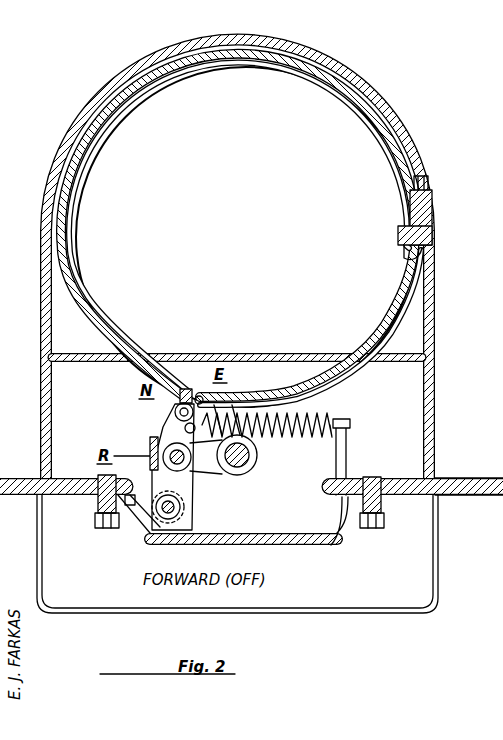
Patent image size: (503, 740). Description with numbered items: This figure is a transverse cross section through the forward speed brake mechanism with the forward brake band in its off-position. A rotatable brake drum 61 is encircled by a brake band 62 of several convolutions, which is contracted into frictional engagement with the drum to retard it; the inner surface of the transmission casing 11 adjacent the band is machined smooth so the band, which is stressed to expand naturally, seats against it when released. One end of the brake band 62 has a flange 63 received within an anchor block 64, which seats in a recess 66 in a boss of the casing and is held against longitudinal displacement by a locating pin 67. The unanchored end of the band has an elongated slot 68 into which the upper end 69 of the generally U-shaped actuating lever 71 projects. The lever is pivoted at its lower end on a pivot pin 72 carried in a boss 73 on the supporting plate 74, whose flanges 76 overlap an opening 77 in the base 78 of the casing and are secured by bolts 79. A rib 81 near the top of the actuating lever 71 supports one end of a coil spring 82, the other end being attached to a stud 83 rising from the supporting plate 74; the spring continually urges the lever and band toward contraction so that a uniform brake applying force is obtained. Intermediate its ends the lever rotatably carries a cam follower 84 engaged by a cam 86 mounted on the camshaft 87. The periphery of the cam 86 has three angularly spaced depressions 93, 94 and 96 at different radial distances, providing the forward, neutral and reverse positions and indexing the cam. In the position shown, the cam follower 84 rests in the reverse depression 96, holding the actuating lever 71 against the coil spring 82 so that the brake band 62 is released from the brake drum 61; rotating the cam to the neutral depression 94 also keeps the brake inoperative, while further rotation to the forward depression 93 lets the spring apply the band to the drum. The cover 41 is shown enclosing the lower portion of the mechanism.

The transmission casing 11 is at (370, 82).
The cover 41 is at (121, 548).
The brake drum 61 is at (385, 125).
The brake band 62 is at (405, 157).
The flange 63 is at (432, 215).
The anchor block 64 is at (440, 237).
The recess 66 is at (428, 246).
The locating pin 67 is at (432, 184).
The elongated slot 68 is at (188, 390).
The upper end of actuating lever 69 is at (201, 394).
The actuating lever 71 is at (160, 434).
The pivot pin 72 is at (180, 507).
The boss 73 is at (195, 528).
The supporting plate 74 is at (305, 545).
The flanges 76 is at (96, 506).
The opening 77 is at (355, 478).
The base 78 is at (412, 496).
The bolts 79 is at (100, 526).
The rib 81 is at (160, 420).
The coil spring 82 is at (308, 422).
The stud 83 is at (350, 450).
The cam follower 84 is at (170, 464).
The cam 86 is at (233, 472).
The camshaft 87 is at (250, 456).
The depression 93 is at (240, 436).
The depression 94 is at (195, 432).
The depression 96 is at (185, 459).